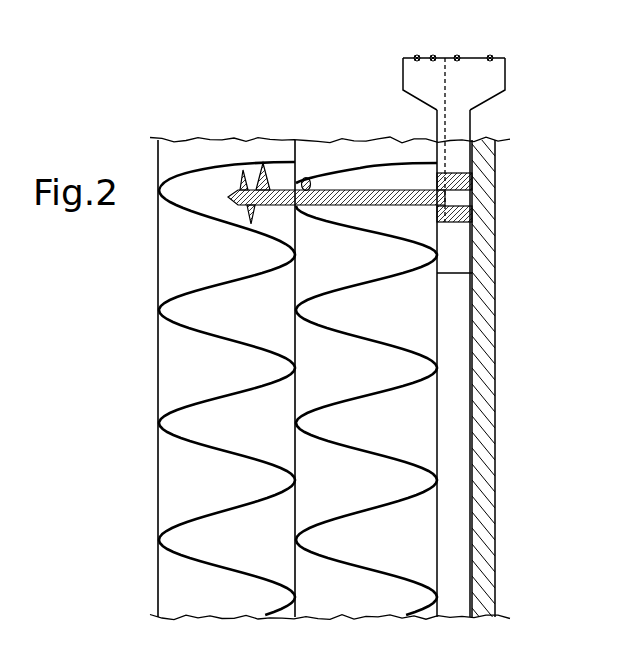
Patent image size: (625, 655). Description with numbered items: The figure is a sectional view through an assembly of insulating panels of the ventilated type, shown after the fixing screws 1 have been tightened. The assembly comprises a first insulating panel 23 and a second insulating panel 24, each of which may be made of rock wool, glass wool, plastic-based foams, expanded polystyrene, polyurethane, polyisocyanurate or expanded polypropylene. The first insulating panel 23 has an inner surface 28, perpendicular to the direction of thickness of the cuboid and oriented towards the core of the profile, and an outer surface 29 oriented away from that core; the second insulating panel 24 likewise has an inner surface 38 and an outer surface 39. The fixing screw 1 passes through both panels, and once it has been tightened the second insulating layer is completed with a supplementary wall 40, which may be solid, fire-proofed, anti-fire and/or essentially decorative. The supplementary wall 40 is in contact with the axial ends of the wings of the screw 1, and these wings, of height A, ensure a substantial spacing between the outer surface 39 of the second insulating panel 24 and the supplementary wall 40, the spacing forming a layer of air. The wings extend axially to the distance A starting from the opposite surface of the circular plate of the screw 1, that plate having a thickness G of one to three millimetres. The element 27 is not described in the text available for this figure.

The fixing screw 1 is at (305, 178).
The first insulating panel 23 is at (205, 185).
The second insulating panel 24 is at (381, 152).
The inlet funnel 27 is at (391, 111).
The inner surface 28 is at (158, 372).
The outer surface 29 is at (297, 350).
The inner surface 38 is at (296, 410).
The outer surface 39 is at (495, 274).
The supplementary wall 40 is at (485, 160).
The thickness of the circular plate G is at (417, 58).
The height of the wings A is at (470, 58).